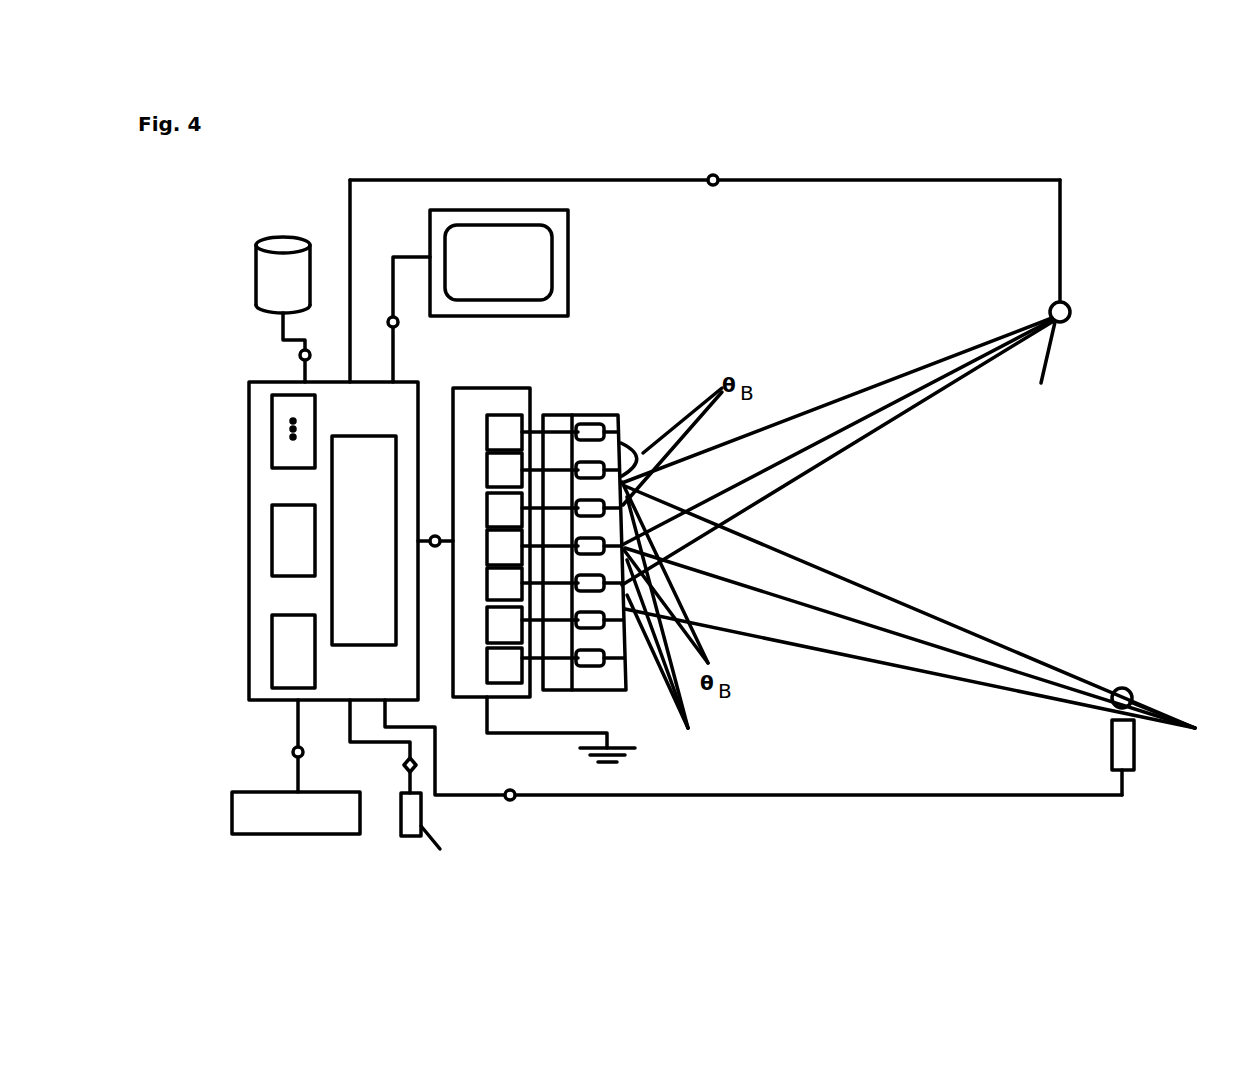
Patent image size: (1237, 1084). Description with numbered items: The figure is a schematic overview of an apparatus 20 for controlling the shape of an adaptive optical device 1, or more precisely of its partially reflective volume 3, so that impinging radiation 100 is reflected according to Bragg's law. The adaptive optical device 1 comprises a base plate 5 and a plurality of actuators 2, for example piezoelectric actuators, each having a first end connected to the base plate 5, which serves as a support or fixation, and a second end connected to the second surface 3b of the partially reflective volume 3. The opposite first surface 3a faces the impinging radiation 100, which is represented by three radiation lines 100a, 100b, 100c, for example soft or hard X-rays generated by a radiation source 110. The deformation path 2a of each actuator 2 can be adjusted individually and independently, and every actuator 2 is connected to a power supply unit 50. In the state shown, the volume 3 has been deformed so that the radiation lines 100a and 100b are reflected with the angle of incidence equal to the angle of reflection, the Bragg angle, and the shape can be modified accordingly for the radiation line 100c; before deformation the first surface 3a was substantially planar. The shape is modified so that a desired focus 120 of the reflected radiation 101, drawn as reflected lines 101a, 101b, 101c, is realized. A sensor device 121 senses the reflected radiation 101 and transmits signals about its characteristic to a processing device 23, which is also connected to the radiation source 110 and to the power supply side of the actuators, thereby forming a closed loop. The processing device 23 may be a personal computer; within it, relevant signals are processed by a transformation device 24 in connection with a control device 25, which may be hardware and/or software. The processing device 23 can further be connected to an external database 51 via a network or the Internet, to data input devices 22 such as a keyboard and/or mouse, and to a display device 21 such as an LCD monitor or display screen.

The apparatus 20 is at (1130, 178).
The adaptive optical device 1 is at (606, 494).
The actuators 2 is at (610, 680).
The deformation path 2a is at (670, 627).
The partially reflective volume 3 is at (637, 424).
The first surface 3a is at (623, 421).
The second surface 3b is at (622, 542).
The base plate 5 is at (548, 418).
The display device 21 is at (570, 245).
The data input devices 22 is at (330, 836).
The processing device 23 is at (289, 541).
The transformation device 24 is at (364, 540).
The control device 25 is at (293, 540).
The power supply unit 50 is at (496, 388).
The external database 51 is at (278, 240).
The impinging radiation 100 is at (1036, 308).
The radiation line 100a is at (837, 400).
The radiation line 100b is at (837, 432).
The radiation line 100c is at (837, 453).
The reflected radiation 101 is at (1108, 713).
The reflected radiation line 101a is at (910, 607).
The reflected radiation line 101b is at (910, 638).
The reflected radiation line 101c is at (910, 668).
The radiation source 110 is at (1052, 368).
The focus 120 is at (1128, 683).
The sensor device 121 is at (1136, 748).